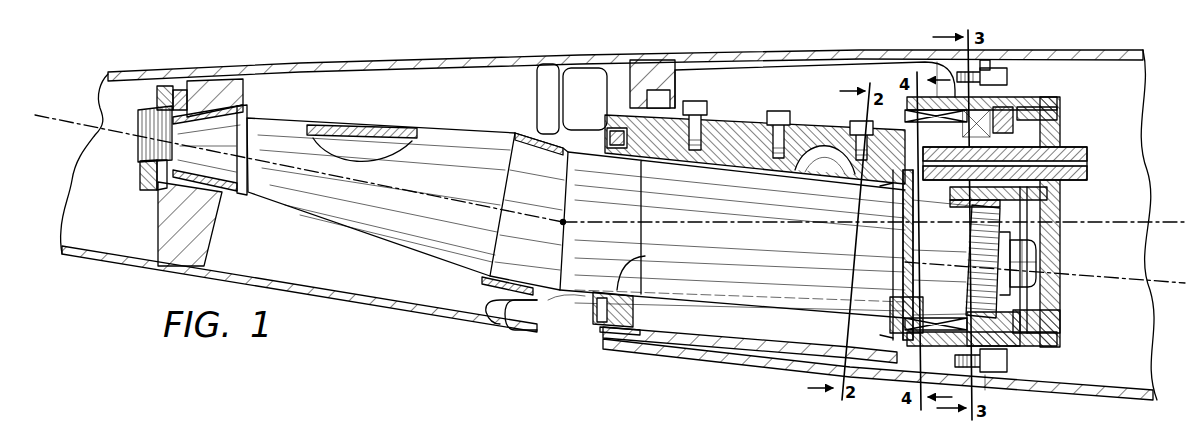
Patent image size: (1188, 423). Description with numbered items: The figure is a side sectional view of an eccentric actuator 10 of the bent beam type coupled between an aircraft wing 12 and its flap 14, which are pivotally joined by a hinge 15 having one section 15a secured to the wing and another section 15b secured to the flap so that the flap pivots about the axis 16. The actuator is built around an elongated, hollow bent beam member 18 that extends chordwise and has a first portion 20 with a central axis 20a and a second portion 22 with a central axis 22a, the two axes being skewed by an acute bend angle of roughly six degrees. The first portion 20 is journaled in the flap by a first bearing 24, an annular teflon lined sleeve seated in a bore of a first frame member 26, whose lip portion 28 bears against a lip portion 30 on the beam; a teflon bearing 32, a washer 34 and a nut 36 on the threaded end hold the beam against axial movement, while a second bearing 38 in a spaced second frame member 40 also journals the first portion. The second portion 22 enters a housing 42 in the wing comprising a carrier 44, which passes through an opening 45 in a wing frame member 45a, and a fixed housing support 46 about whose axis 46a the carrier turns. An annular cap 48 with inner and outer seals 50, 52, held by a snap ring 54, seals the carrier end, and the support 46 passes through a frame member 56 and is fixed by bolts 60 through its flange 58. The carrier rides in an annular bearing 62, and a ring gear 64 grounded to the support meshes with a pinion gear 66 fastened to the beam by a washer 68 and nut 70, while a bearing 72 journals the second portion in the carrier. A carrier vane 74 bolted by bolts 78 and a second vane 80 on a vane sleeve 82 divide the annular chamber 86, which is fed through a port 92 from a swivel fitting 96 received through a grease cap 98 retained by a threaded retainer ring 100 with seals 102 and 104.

The eccentric actuator 10 is at (797, 51).
The aircraft wing 12 is at (856, 36).
The flap 14 is at (394, 64).
The hinge 15 is at (594, 73).
The hinge section 15a is at (637, 109).
The hinge section 15b is at (590, 131).
The axis 16 is at (567, 224).
The bent beam member 18 is at (463, 132).
The first portion 20 is at (413, 127).
The central axis 20a is at (68, 119).
The second portion 22 is at (613, 208).
The central axis 22a is at (1116, 278).
The first bearing 24 is at (214, 107).
The first support or frame member 26 is at (201, 219).
The circumferential lip portion 28 is at (241, 105).
The circumferential lip portion 30 is at (249, 112).
The teflon bearing 32 is at (188, 86).
The washer 34 is at (181, 84).
The nut 36 is at (150, 188).
The second bearing 38 is at (482, 283).
The second support or frame member 40 is at (488, 301).
The housing 42 is at (858, 76).
The carrier 44 is at (745, 116).
The opening 45 is at (676, 96).
The frame member 45a is at (663, 78).
The housing support 46 is at (1070, 96).
The axis 46a is at (1163, 218).
The annular cap 48 is at (597, 304).
The inner seal 50 is at (620, 290).
The outer seal 52 is at (608, 332).
The snap ring 54 is at (608, 118).
The frame member 56 is at (975, 373).
The flange 58 is at (986, 62).
The bolts 60 is at (1012, 66).
The annular bearing 62 is at (905, 113).
The ring gear 64 is at (1011, 108).
The pinion gear 66 is at (1002, 229).
The washer 68 is at (1010, 246).
The nut 70 is at (1030, 262).
The bearing 72 is at (898, 321).
The carrier vane 74 is at (812, 136).
The bolts 78 is at (697, 104).
The second longitudinal vane 80 is at (812, 161).
The vane sleeve 82 is at (838, 242).
The annular chamber 86 is at (728, 328).
The port 92 is at (896, 179).
The swivel fitting 96 is at (1086, 146).
The grease cap 98 is at (1047, 217).
The threaded retainer ring 100 is at (1064, 331).
The inner annular seal 102 is at (1049, 198).
The outer annular seal 104 is at (1061, 338).